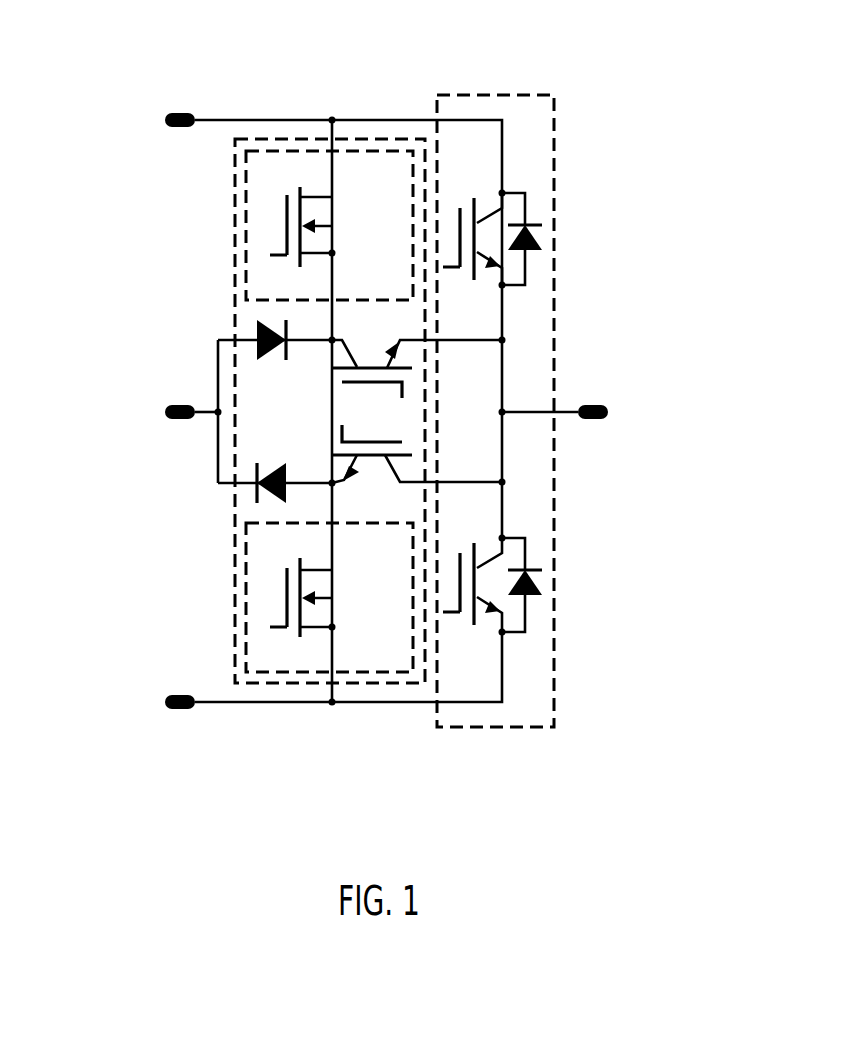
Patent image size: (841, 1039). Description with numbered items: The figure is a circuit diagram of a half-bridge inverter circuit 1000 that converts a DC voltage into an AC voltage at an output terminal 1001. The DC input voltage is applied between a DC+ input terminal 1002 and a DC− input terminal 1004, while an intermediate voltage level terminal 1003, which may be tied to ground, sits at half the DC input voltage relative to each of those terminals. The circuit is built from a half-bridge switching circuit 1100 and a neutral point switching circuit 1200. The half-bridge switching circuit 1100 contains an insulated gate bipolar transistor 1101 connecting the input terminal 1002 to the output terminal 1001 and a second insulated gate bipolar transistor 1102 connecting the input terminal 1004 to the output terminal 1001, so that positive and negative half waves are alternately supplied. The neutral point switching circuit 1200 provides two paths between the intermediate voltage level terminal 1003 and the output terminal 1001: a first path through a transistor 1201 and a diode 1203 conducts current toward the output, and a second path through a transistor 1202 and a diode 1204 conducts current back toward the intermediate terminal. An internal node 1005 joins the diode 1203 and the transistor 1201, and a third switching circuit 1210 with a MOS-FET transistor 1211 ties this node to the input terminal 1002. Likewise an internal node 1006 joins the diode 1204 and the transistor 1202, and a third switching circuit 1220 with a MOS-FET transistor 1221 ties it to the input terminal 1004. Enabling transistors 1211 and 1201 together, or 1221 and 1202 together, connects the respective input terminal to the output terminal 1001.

The half-bridge inverter circuit 1000 is at (618, 67).
The output terminal 1001 is at (608, 412).
The DC+ input terminal 1002 is at (165, 121).
The intermediate voltage level terminal 1003 is at (165, 412).
The DC− input terminal 1004 is at (165, 702).
The internal node 1005 is at (332, 338).
The internal node 1006 is at (330, 487).
The half-bridge switching circuit 1100 is at (515, 727).
The insulated gate bipolar transistor 1101 is at (545, 243).
The insulated gate bipolar transistor 1102 is at (545, 582).
The neutral point switching circuit 1200 is at (243, 683).
The transistor 1201 is at (405, 365).
The transistor 1202 is at (405, 458).
The diode 1203 is at (257, 332).
The diode 1204 is at (257, 490).
The third switching circuit 1210 is at (380, 150).
The transistor 1211 is at (275, 218).
The third switching circuit 1220 is at (380, 672).
The transistor 1221 is at (275, 605).